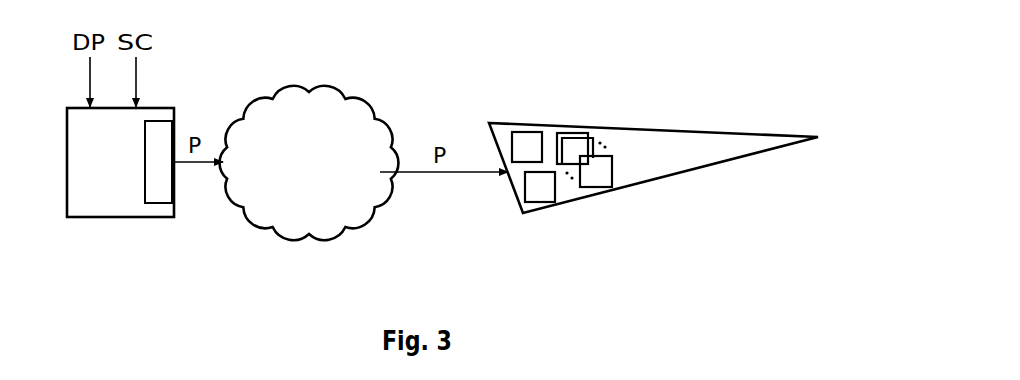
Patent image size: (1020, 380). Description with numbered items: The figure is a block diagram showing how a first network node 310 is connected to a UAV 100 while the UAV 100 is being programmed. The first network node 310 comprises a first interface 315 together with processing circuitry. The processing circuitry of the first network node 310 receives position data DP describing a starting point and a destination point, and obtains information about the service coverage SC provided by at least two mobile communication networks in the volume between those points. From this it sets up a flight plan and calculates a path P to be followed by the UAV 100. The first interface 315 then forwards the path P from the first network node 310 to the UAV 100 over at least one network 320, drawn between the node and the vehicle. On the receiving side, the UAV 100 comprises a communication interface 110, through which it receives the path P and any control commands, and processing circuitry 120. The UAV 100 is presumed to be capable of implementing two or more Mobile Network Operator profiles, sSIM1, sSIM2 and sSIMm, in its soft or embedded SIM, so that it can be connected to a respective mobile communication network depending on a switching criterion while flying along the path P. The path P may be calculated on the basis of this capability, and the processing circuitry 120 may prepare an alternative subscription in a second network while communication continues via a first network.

The UAV 100 is at (680, 129).
The communication interface 110 is at (518, 148).
The processing circuitry 120 is at (537, 187).
The first network node 310 is at (97, 215).
The first interface 315 is at (158, 200).
The network 320 is at (310, 88).
The soft or embedded SIM MNO profile sSIM1 is at (568, 133).
The soft or embedded SIM MNO profile sSIM2 is at (585, 133).
The soft or embedded SIM MNO profile sSIMm is at (593, 187).